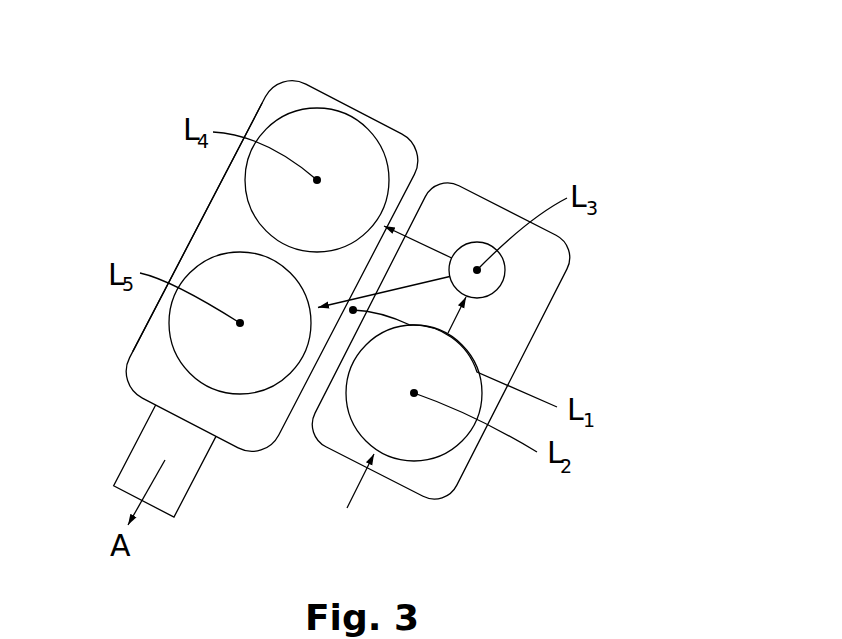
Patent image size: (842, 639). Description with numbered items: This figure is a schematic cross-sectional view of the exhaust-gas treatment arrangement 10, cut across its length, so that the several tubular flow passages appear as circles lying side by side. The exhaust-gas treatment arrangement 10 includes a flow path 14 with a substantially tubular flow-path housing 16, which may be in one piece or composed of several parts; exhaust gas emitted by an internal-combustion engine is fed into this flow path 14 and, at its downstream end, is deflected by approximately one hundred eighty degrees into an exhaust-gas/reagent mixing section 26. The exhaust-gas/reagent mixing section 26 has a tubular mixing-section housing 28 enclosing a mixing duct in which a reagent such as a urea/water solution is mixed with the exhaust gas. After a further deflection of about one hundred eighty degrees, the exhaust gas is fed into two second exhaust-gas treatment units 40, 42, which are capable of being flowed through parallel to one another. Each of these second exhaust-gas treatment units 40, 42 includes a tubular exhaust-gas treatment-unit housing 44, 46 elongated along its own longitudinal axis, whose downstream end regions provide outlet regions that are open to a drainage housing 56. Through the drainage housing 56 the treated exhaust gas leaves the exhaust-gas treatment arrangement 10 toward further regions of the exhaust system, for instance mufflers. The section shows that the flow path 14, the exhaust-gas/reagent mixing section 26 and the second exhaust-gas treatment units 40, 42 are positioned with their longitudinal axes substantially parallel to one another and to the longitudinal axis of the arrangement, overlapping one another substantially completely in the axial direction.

The exhaust-gas treatment arrangement 10 is at (628, 126).
The flow path 14 is at (337, 445).
The flow-path housing 16 is at (440, 460).
The exhaust-gas/reagent mixing section 26 is at (506, 278).
The mixing-section housing 28 is at (484, 240).
The second exhaust-gas treatment unit 40 is at (327, 105).
The second exhaust-gas treatment unit 42 is at (183, 369).
The exhaust-gas treatment-unit housing 44 is at (384, 151).
The exhaust-gas treatment-unit housing 46 is at (170, 338).
The drainage housing 56 is at (199, 211).